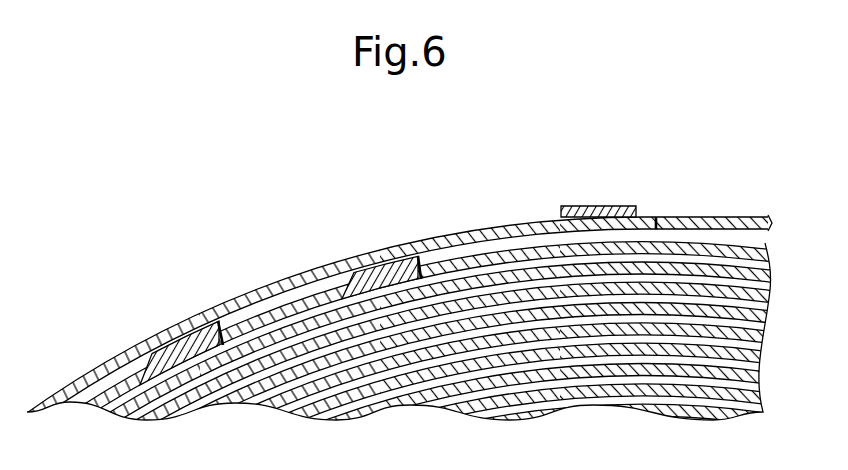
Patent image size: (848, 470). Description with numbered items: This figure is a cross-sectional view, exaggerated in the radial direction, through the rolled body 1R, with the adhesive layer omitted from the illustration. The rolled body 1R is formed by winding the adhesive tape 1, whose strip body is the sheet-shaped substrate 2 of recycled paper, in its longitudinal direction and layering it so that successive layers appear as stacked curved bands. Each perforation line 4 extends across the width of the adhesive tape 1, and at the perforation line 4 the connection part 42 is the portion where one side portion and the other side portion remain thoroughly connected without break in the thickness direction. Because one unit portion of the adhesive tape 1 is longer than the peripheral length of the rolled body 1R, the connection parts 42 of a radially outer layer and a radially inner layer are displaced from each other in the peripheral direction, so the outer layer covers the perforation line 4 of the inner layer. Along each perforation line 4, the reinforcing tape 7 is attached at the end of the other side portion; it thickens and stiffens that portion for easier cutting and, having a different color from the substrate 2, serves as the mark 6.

The rolled body 1R is at (166, 215).
The adhesive tape 1 is at (397, 308).
The substrate 2 is at (742, 214).
The perforation line 4 is at (444, 239).
The connection part 42 is at (227, 345).
The mark 6 is at (382, 258).
The reinforcing tape 7 is at (157, 356).